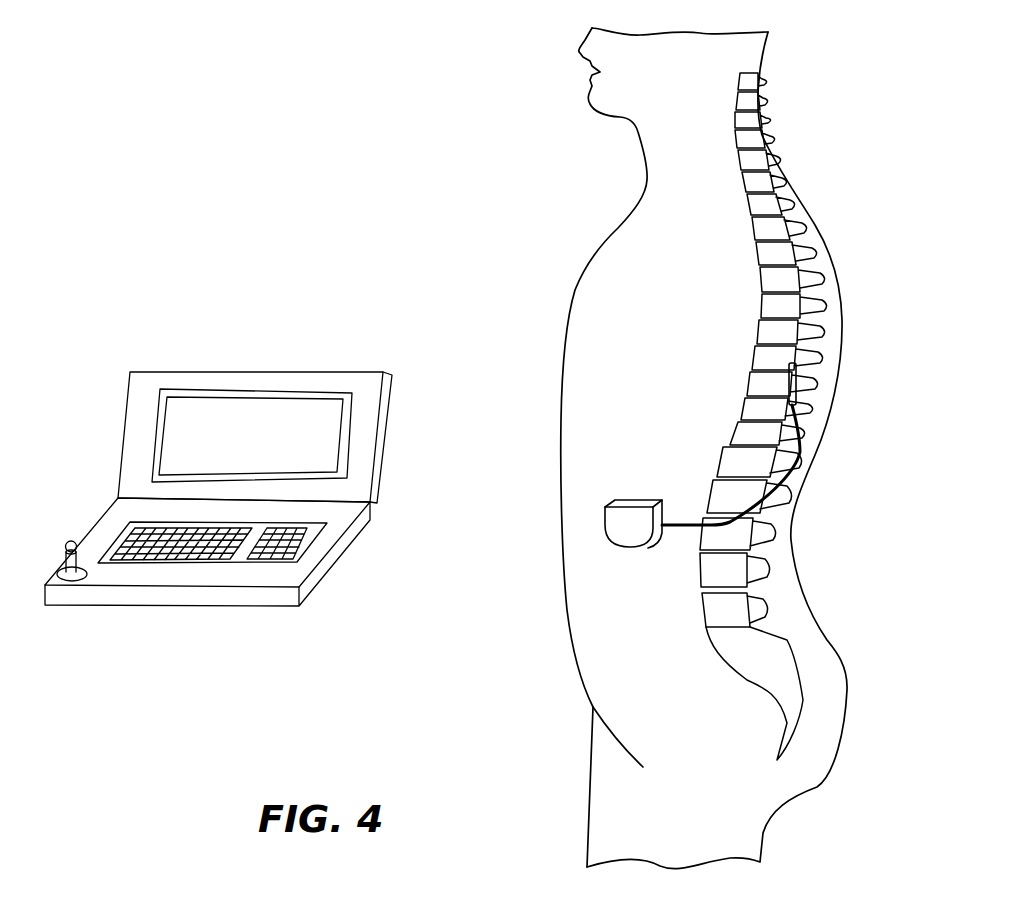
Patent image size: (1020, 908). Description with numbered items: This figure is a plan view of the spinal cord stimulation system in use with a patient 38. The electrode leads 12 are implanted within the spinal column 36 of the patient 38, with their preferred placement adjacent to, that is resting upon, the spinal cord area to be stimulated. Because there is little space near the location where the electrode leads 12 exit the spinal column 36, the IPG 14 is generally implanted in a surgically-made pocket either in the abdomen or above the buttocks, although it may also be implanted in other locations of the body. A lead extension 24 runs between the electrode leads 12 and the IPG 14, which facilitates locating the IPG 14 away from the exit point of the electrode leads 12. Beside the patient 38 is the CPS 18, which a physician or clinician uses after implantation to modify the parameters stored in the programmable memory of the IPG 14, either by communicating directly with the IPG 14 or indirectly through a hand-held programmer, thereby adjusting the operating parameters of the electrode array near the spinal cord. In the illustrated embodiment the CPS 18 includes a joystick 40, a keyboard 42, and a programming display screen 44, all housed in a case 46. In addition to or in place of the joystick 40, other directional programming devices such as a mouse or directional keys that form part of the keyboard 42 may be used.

The electrode leads 12 is at (806, 384).
The IPG 14 is at (632, 530).
The CPS 18 is at (235, 322).
The lead extension 24 is at (801, 451).
The spinal column 36 is at (760, 353).
The patient 38 is at (588, 265).
The joystick 40 is at (67, 543).
The keyboard 42 is at (177, 547).
The programming display screen 44 is at (345, 431).
The case 46 is at (101, 538).